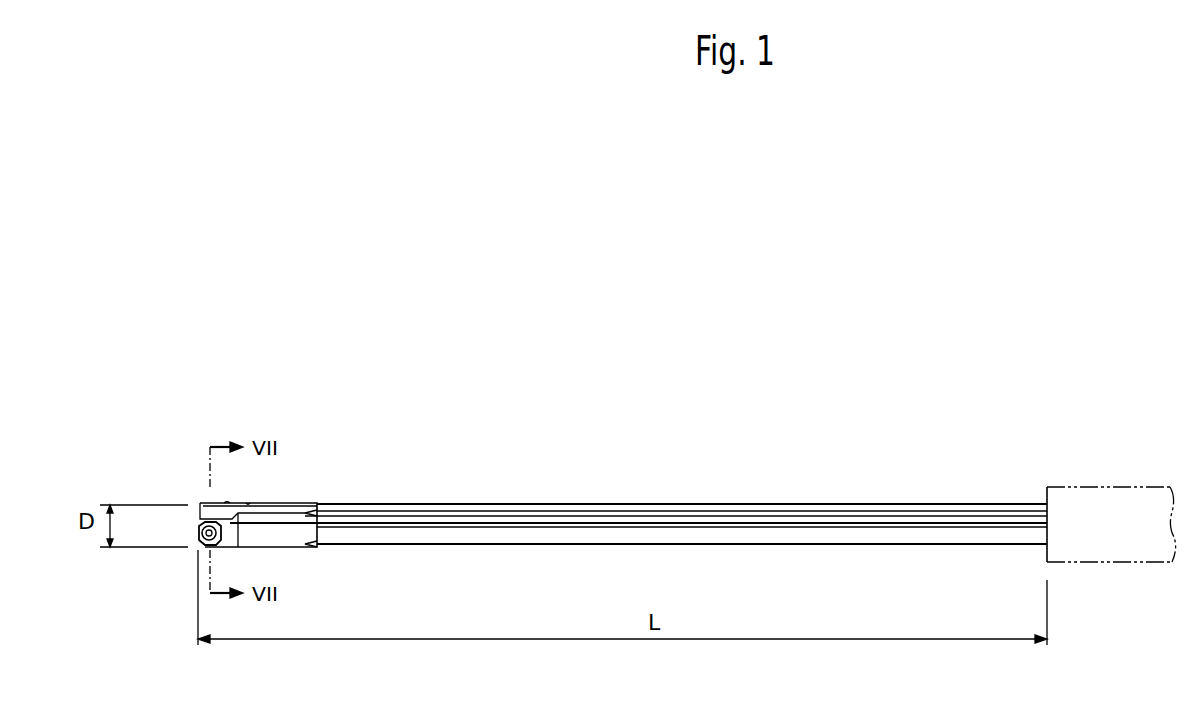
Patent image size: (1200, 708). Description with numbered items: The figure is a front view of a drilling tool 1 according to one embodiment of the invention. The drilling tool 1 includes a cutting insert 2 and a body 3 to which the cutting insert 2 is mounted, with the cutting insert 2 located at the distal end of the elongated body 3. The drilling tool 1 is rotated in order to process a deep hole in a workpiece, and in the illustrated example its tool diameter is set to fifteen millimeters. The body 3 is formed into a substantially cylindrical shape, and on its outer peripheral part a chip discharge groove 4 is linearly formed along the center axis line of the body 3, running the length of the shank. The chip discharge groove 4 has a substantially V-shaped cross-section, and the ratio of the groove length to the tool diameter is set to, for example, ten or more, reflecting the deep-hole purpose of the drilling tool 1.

The drilling tool 1 is at (659, 477).
The cutting insert 2 is at (200, 548).
The body 3 is at (638, 507).
The chip discharge groove 4 is at (393, 535).